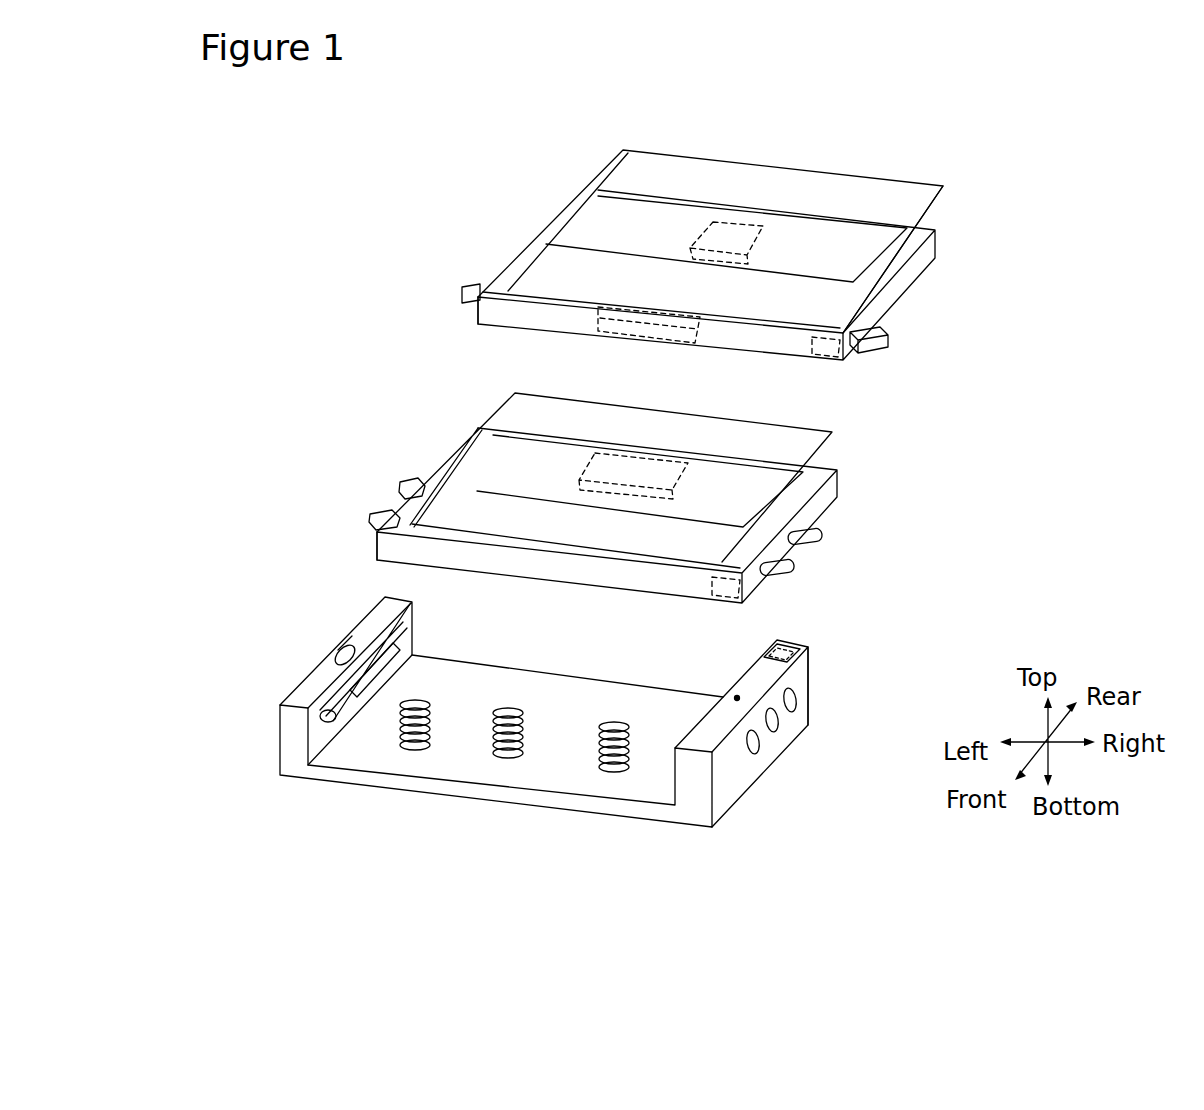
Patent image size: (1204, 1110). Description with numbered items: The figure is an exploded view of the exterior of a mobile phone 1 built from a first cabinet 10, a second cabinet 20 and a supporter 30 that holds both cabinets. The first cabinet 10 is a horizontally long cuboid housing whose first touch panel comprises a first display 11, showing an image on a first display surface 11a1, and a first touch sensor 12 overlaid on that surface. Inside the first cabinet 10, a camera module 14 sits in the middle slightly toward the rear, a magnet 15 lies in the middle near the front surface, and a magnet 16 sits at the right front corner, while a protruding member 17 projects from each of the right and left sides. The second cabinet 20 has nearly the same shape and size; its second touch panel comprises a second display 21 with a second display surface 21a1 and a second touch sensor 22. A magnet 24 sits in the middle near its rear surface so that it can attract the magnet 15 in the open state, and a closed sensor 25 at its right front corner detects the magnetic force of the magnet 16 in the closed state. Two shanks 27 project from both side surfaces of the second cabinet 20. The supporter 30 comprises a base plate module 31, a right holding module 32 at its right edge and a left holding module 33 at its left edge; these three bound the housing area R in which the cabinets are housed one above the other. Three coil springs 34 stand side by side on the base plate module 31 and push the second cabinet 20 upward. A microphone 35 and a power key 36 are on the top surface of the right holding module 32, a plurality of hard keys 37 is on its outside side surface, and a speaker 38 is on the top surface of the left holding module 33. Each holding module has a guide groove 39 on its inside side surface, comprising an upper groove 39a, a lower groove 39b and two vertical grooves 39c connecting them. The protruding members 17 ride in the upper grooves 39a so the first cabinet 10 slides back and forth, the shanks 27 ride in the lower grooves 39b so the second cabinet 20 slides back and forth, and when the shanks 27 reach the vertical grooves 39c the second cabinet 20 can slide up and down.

The mobile phone 1 is at (452, 157).
The first cabinet 10 is at (938, 230).
The first display 11 is at (525, 250).
The first display surface 11a1 is at (550, 283).
The first touch sensor 12 is at (948, 180).
The camera module 14 is at (730, 190).
The magnet 15 is at (703, 333).
The magnet 16 is at (836, 352).
The protruding member 17 is at (887, 332).
The second cabinet 20 is at (852, 482).
The second display 21 is at (480, 521).
The second display surface 21a1 is at (480, 517).
The second touch sensor 22 is at (838, 436).
The magnet 24 is at (628, 483).
The closed sensor 25 is at (752, 598).
The shanks 27 is at (402, 485).
The supporter 30 is at (687, 840).
The base plate module 31 is at (585, 812).
The right holding module 32 is at (732, 787).
The left holding module 33 is at (280, 742).
The coil springs 34 is at (618, 723).
The microphone 35 is at (805, 685).
The power key 36 is at (800, 647).
The hard keys 37 is at (785, 718).
The speaker 38 is at (338, 648).
The guide groove 39 is at (385, 642).
The upper groove 39a is at (377, 648).
The lower groove 39b is at (412, 658).
The vertical grooves 39c is at (323, 713).
The housing area R is at (633, 710).